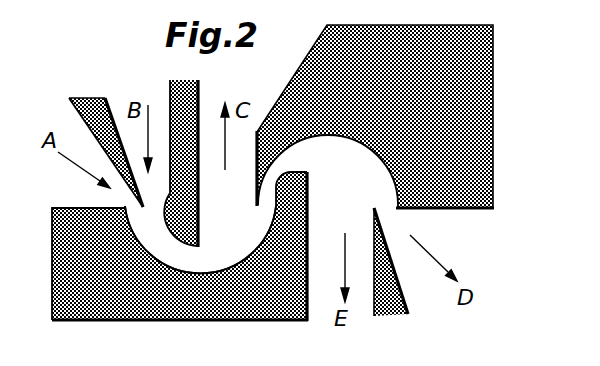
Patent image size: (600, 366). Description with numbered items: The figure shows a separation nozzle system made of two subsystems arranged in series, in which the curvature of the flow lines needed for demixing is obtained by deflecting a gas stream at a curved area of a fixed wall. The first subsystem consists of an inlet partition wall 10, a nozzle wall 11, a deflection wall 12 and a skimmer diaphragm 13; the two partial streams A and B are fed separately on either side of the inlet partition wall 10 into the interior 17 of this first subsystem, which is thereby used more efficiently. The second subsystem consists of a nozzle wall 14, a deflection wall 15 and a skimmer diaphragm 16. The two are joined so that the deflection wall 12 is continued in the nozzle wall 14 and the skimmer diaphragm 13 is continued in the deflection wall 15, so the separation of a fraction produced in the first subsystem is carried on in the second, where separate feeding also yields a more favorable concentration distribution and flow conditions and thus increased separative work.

The inlet partition wall 10 is at (91, 98).
The nozzle wall 11 is at (184, 80).
The deflection wall 12 is at (135, 314).
The skimmer diaphragm 13 is at (256, 197).
The nozzle wall 14 is at (309, 200).
The deflection wall 15 is at (400, 120).
The skimmer diaphragm 16 is at (397, 308).
The interior 17 is at (202, 263).